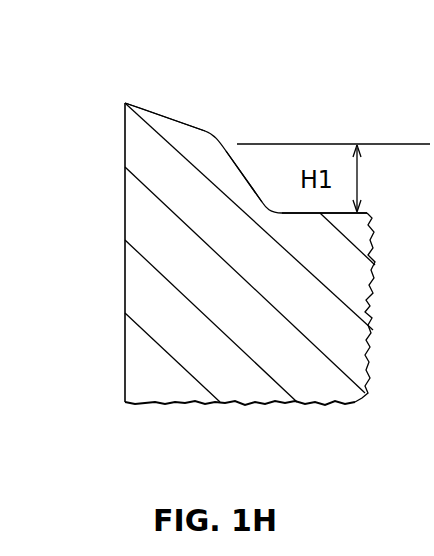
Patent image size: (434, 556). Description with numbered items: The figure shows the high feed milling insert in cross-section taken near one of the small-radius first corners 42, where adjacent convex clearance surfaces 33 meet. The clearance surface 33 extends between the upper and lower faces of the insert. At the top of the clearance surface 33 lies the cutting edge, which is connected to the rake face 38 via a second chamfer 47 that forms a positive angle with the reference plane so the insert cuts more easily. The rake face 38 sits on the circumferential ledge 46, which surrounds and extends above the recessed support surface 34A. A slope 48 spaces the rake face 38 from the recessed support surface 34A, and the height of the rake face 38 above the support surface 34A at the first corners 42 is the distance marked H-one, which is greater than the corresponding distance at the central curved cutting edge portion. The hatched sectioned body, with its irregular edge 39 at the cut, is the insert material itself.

The first corner 42 is at (100, 82).
The second chamfer 47 is at (127, 101).
The rake face 38 is at (173, 115).
The slope 48 is at (240, 178).
The circumferential ledge 46 is at (172, 155).
The clearance surface 33 is at (123, 218).
The recessed support surface 34A is at (367, 213).
The serrated right side edge 39 is at (394, 307).